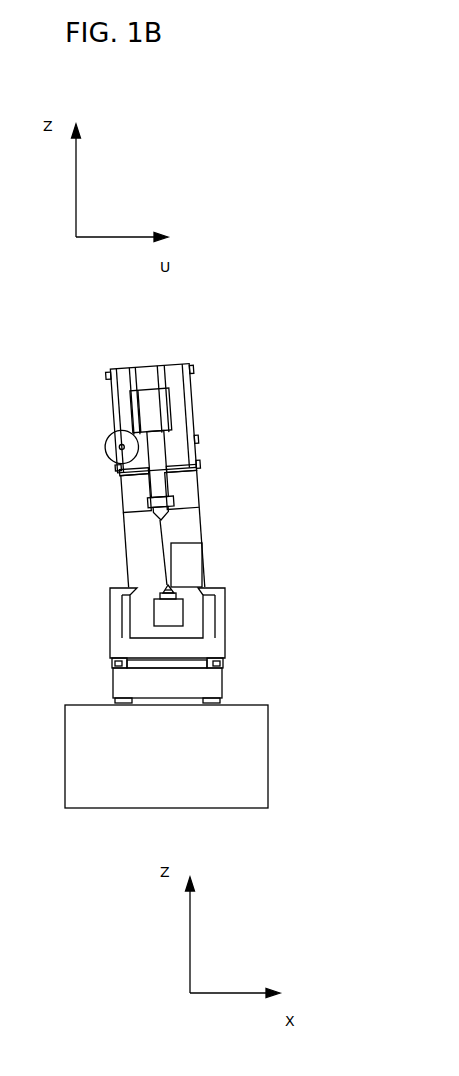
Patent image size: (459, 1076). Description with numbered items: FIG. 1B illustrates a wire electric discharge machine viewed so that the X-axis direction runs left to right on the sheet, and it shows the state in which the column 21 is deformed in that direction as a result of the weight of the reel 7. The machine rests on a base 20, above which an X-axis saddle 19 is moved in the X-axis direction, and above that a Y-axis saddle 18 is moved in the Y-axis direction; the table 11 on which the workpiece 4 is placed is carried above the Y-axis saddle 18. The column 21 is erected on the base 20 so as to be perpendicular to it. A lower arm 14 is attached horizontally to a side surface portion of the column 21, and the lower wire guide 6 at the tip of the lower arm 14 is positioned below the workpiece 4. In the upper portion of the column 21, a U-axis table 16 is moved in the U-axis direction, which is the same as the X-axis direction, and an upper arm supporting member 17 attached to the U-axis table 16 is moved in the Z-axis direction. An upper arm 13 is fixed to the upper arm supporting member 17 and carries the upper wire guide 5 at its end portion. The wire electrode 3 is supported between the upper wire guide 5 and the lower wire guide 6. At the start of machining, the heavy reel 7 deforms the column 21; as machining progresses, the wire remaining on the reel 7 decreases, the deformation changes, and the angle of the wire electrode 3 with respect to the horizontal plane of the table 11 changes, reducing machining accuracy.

The wire electrode 3 is at (166, 528).
The workpiece 4 is at (203, 568).
The upper wire guide 5 is at (153, 509).
The lower wire guide 6 is at (177, 596).
The reel 7 is at (106, 437).
The table 11 is at (118, 590).
The upper arm 13 is at (146, 500).
The lower arm 14 is at (176, 616).
The U-axis table 16 is at (183, 375).
The upper arm supporting member 17 is at (152, 414).
The Y-axis saddle 18 is at (115, 648).
The X-axis saddle 19 is at (192, 682).
The base 20 is at (160, 781).
The column 21 is at (190, 533).